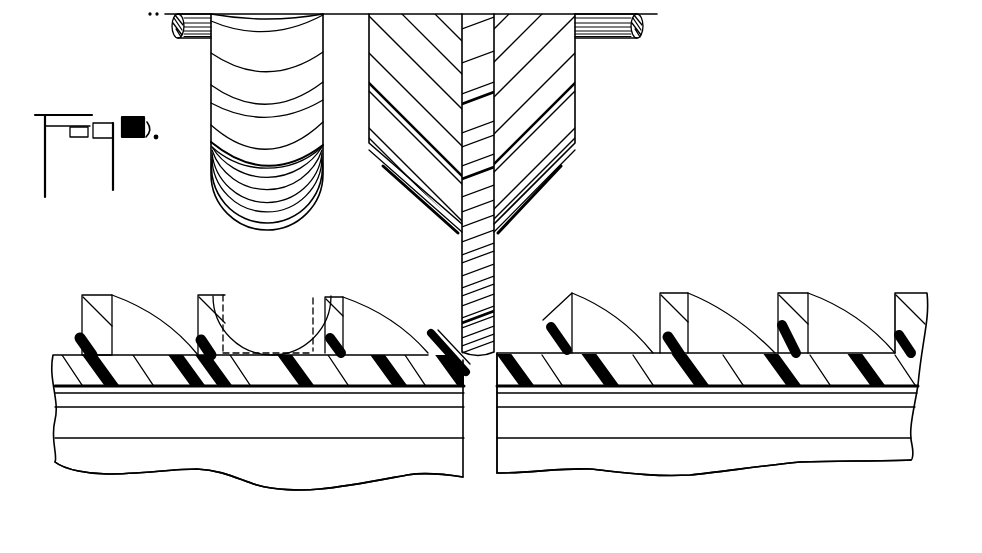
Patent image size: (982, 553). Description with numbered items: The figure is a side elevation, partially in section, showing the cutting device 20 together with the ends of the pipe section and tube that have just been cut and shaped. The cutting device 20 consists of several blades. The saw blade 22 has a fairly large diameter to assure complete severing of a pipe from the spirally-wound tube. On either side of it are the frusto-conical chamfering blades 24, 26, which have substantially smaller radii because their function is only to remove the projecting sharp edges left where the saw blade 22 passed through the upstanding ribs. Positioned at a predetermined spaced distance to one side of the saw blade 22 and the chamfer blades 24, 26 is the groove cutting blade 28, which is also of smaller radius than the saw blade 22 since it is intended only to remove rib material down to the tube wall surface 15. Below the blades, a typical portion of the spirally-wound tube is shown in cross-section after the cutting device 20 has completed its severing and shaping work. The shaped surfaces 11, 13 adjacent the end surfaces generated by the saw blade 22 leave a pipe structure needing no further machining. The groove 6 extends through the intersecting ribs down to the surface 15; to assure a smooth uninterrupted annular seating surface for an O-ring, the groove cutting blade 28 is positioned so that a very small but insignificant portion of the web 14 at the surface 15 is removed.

The groove 6 is at (228, 340).
The shaped surface 11 is at (261, 382).
The shaped surface 13 is at (500, 352).
The web 14 is at (715, 360).
The tube wall surface 15 is at (157, 355).
The cutting device 20 is at (480, 146).
The saw blade 22 is at (497, 283).
The frusto-conical chamfering blade 24 is at (403, 182).
The frusto-conical chamfering blade 26 is at (562, 180).
The groove cutting blade 28 is at (212, 142).